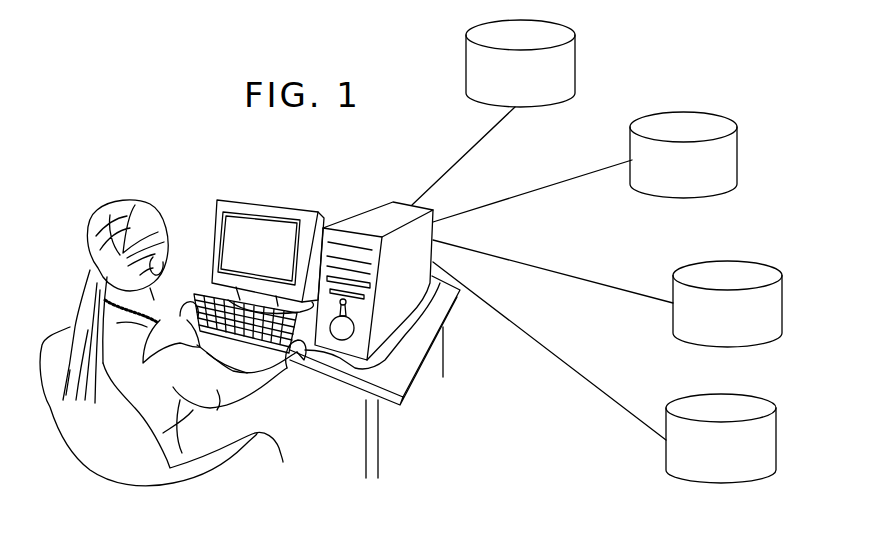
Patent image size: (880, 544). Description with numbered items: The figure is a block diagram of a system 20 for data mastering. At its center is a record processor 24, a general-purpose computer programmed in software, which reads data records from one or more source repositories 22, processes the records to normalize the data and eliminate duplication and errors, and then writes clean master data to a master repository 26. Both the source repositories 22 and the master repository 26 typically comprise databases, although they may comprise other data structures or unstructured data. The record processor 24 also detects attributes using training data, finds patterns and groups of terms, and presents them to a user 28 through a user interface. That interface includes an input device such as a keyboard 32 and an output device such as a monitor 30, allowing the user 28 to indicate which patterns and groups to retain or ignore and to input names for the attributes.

The system 20 is at (164, 113).
The source repositories 22 is at (575, 62).
The record processor 24 is at (380, 215).
The master repository 26 is at (776, 425).
The user 28 is at (100, 233).
The monitor 30 is at (265, 206).
The keyboard 32 is at (213, 292).